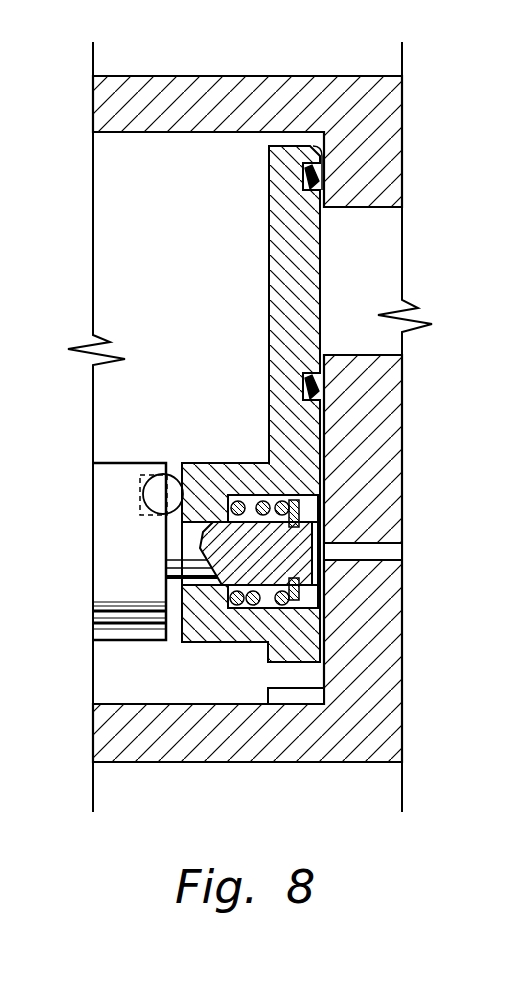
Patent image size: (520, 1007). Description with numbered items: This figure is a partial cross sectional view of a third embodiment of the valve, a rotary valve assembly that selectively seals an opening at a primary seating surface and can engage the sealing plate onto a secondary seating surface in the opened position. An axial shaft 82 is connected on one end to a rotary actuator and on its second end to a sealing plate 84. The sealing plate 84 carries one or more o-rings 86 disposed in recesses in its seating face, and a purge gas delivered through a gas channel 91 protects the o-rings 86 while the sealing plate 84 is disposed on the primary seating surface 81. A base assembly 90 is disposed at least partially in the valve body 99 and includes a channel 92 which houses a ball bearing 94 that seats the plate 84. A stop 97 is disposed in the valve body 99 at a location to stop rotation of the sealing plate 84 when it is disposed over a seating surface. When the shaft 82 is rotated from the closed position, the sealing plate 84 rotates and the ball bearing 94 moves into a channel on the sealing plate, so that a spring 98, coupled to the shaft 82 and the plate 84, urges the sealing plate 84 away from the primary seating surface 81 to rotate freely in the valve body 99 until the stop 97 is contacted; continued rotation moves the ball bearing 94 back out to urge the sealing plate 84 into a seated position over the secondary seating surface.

The valve body 99 is at (233, 73).
The primary seating surface 81 is at (305, 150).
The o-rings 86 is at (308, 172).
The sealing plate 84 is at (267, 228).
The channel 92 is at (135, 472).
The ball bearing 94 is at (173, 477).
The spring 98 is at (240, 496).
The axial shaft 82 is at (178, 540).
The gas channel 91 is at (385, 562).
The base assembly 90 is at (127, 645).
The stop 97 is at (292, 697).